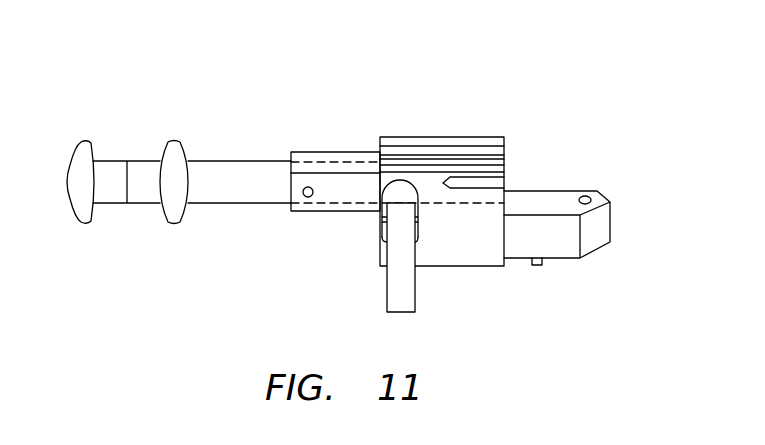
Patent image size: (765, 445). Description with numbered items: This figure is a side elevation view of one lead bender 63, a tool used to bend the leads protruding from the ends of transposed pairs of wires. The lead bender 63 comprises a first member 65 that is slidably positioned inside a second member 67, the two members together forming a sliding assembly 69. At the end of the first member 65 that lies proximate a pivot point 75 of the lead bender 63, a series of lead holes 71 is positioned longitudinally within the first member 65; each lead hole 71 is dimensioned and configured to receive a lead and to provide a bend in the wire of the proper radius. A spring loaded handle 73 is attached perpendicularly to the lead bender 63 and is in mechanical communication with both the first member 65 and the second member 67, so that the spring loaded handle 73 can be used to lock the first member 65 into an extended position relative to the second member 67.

The lead bender 63 is at (490, 100).
The first member 65 is at (237, 203).
The second member 67 is at (330, 212).
The sliding assembly 69 is at (290, 135).
The lead hole 71 is at (493, 182).
The spring loaded handle 73 is at (415, 300).
The pivot point 75 is at (587, 195).